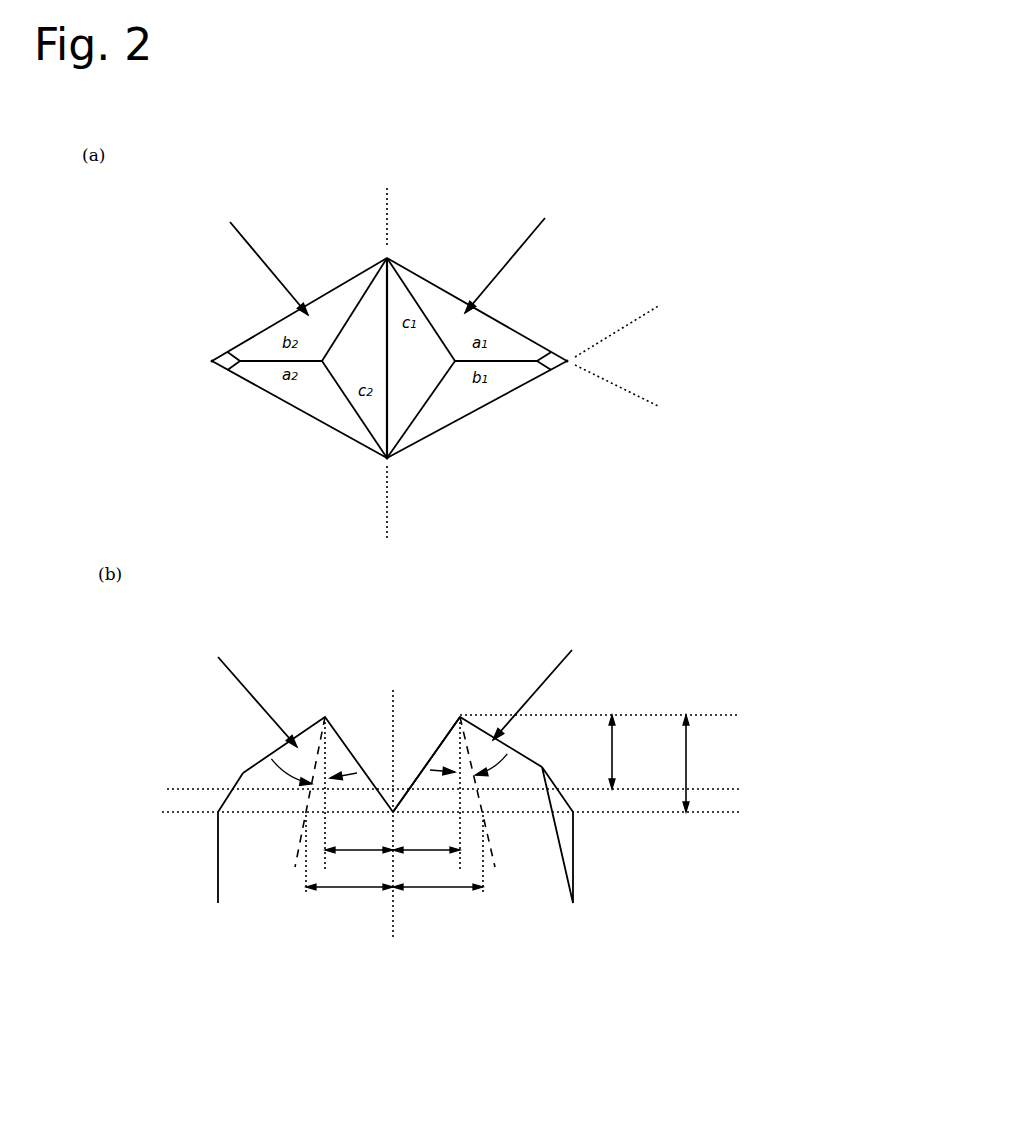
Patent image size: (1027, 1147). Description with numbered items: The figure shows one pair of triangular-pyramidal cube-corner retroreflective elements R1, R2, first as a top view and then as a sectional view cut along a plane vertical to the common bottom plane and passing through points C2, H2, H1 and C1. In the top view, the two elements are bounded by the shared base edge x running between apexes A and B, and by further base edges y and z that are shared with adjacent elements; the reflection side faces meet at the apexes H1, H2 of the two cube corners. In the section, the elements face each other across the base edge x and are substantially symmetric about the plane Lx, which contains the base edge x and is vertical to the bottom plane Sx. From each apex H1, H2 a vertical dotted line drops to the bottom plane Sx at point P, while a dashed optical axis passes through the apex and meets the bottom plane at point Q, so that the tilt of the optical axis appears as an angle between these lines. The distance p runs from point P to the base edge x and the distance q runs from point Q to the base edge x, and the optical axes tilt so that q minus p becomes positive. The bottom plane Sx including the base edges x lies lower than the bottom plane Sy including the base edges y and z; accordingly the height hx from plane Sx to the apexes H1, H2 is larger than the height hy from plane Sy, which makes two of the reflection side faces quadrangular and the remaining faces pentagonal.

The retroreflective element R1 is at (529, 463).
The retroreflective element R2 is at (250, 468).
The apex A of polygonal body A is at (398, 344).
The apex B of polygonal body B is at (398, 470).
The point C1 is at (592, 351).
The point C2 is at (195, 361).
The apex of retroreflective element H1 is at (464, 535).
The apex of retroreflective element H2 is at (316, 535).
The base edge x is at (386, 362).
The base edge y is at (633, 321).
The base edge z is at (633, 399).
The symmetric plane Lx is at (391, 820).
The bottom plane Sx is at (451, 809).
The bottom plane Sy is at (455, 784).
The intersection point P is at (392, 793).
The intersection point Q is at (395, 805).
The distance p is at (392, 841).
The distance q is at (394, 879).
The height hx is at (699, 763).
The height hy is at (637, 752).